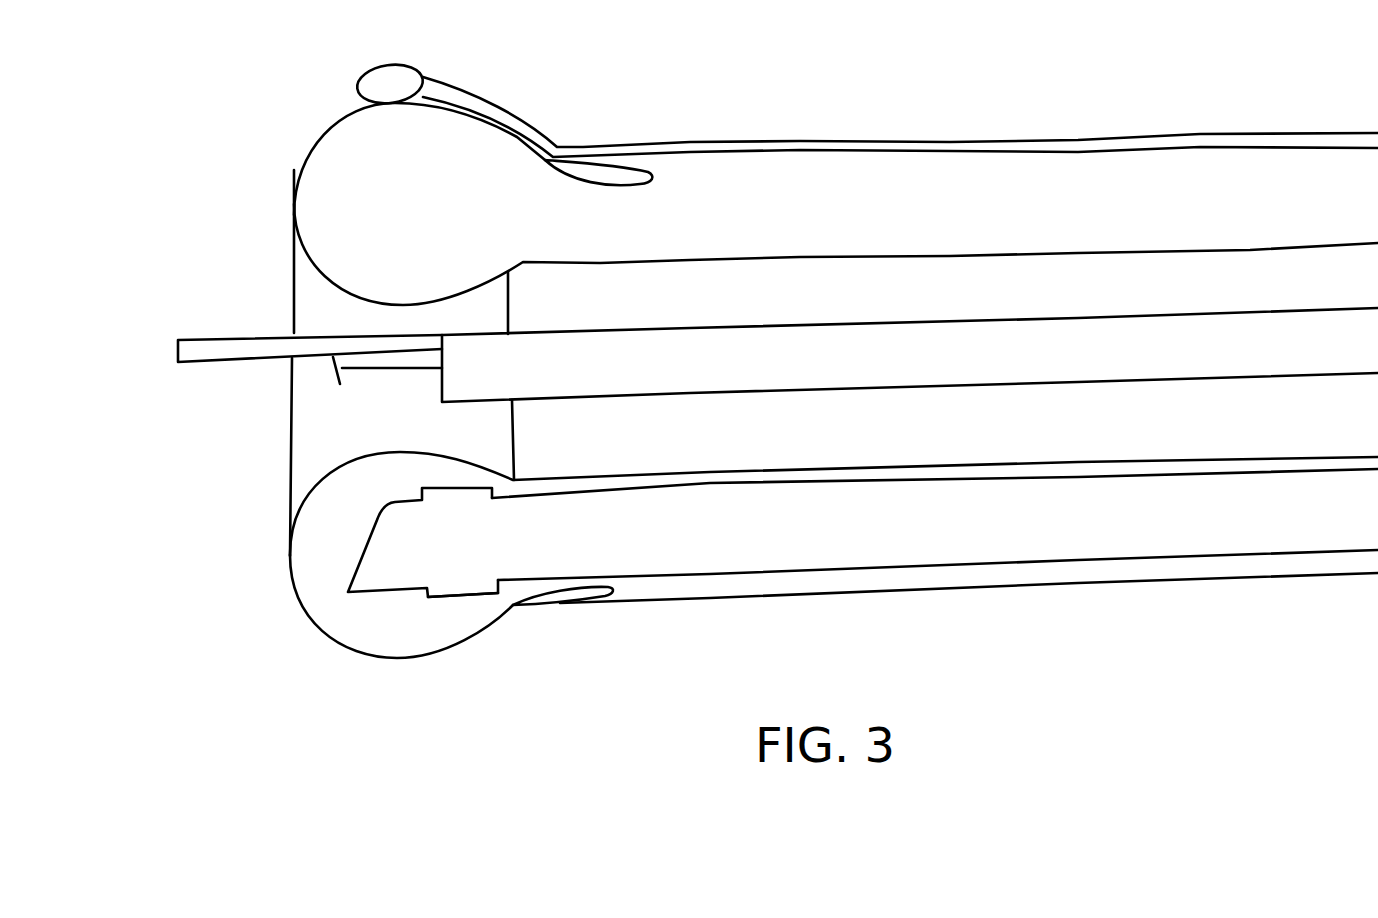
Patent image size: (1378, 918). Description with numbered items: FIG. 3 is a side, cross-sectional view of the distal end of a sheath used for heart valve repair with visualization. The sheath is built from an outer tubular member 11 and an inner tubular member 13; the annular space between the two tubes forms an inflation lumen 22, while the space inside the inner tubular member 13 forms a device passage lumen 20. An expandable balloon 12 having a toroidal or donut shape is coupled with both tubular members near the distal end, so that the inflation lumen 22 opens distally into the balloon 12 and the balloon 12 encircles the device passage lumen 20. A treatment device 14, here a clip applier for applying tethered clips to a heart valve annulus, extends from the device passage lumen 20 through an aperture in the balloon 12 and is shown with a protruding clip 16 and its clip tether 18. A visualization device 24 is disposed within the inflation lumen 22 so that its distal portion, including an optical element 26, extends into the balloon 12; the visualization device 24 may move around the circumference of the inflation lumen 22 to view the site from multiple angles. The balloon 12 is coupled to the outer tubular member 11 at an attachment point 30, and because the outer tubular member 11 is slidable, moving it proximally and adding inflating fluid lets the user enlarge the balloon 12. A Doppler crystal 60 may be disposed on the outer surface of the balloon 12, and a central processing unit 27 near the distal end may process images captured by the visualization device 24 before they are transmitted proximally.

The outer tubular member 11 is at (885, 136).
The expandable balloon 12 is at (460, 672).
The inner tubular member 13 is at (715, 250).
The treatment device 14 is at (432, 323).
The clip 16 is at (336, 385).
The clip tether 18 is at (200, 328).
The device passage lumen 20 is at (735, 425).
The inflation lumen 22 is at (1027, 210).
The visualization device 24 is at (648, 533).
The optical element 26 is at (336, 566).
The central processing unit 27 is at (452, 625).
The attachment point 30 is at (577, 139).
The Doppler crystal 60 is at (396, 56).